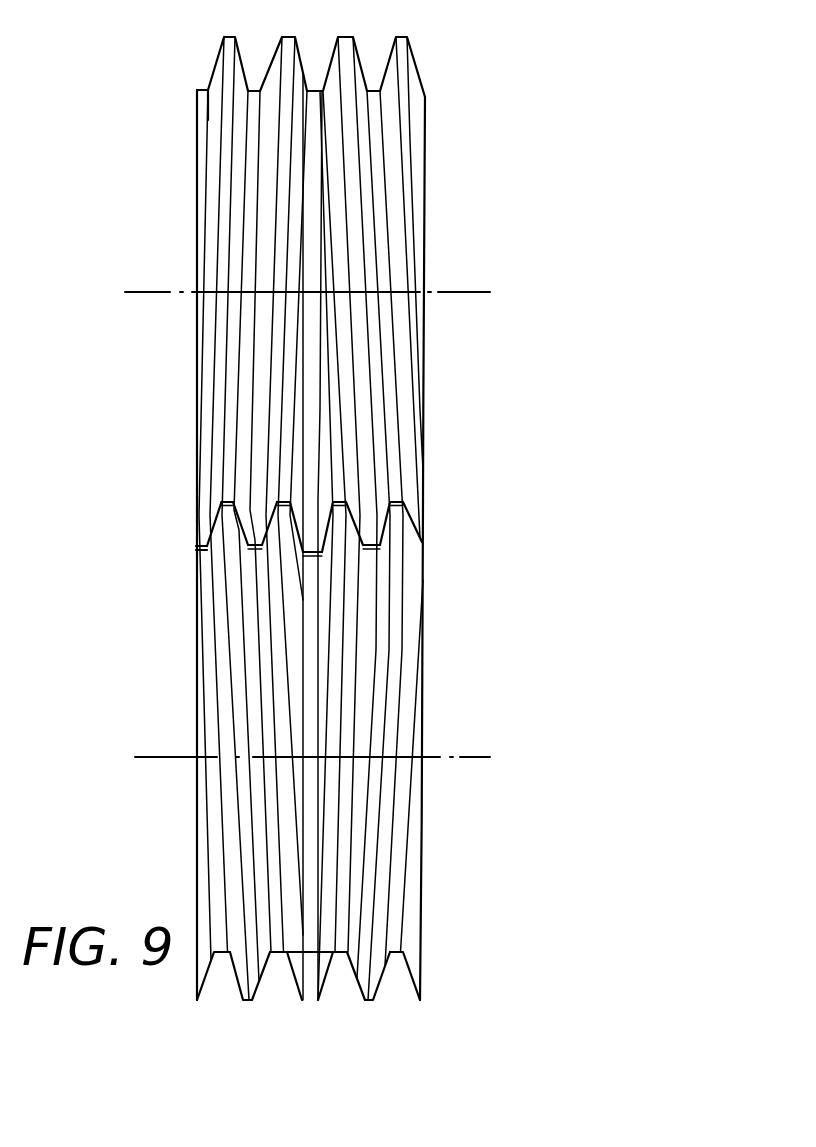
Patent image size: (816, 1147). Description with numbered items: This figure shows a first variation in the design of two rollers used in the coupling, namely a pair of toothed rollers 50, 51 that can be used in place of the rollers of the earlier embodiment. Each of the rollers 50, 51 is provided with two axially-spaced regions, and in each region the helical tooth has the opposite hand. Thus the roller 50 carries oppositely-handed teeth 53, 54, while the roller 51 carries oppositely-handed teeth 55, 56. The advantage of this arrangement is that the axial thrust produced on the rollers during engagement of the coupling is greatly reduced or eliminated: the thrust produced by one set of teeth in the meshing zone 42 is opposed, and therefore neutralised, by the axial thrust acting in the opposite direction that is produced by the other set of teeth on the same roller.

The meshing zone 42 is at (450, 519).
The toothed roller 50 is at (202, 112).
The toothed roller 51 is at (200, 566).
The tooth 53 is at (228, 67).
The tooth 54 is at (402, 50).
The tooth 55 is at (246, 1004).
The tooth 56 is at (369, 1004).